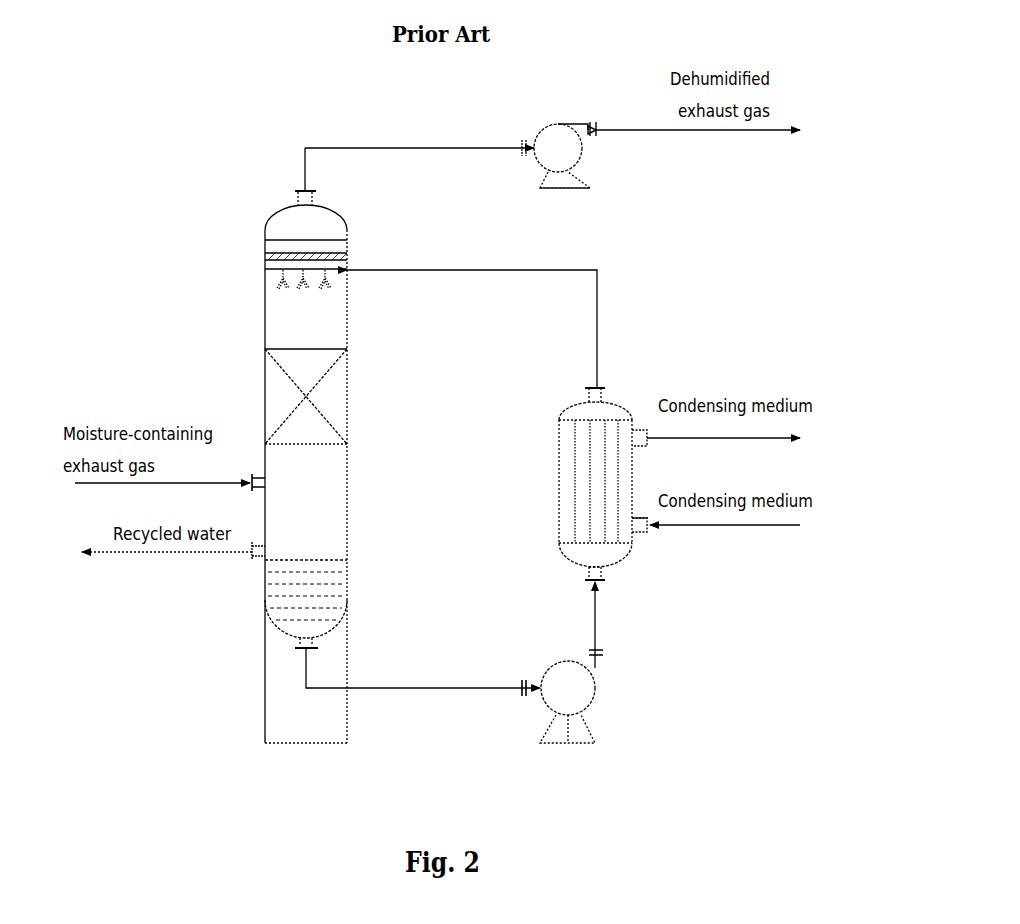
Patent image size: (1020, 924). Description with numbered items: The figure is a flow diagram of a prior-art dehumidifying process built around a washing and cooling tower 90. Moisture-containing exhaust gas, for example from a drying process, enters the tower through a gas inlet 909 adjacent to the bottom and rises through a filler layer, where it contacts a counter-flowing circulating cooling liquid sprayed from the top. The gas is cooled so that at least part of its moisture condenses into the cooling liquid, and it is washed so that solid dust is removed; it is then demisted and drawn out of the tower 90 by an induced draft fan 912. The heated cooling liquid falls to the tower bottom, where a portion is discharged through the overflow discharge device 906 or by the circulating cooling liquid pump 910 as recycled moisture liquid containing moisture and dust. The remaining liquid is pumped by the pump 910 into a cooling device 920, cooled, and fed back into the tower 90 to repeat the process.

The washing and cooling tower 90 is at (265, 313).
The gas inlet 909 is at (253, 477).
The overflow discharge device 906 is at (252, 558).
The induced draft fan 912 is at (583, 150).
The circulating cooling liquid pump 910 is at (597, 687).
The cooling device 920 is at (617, 403).